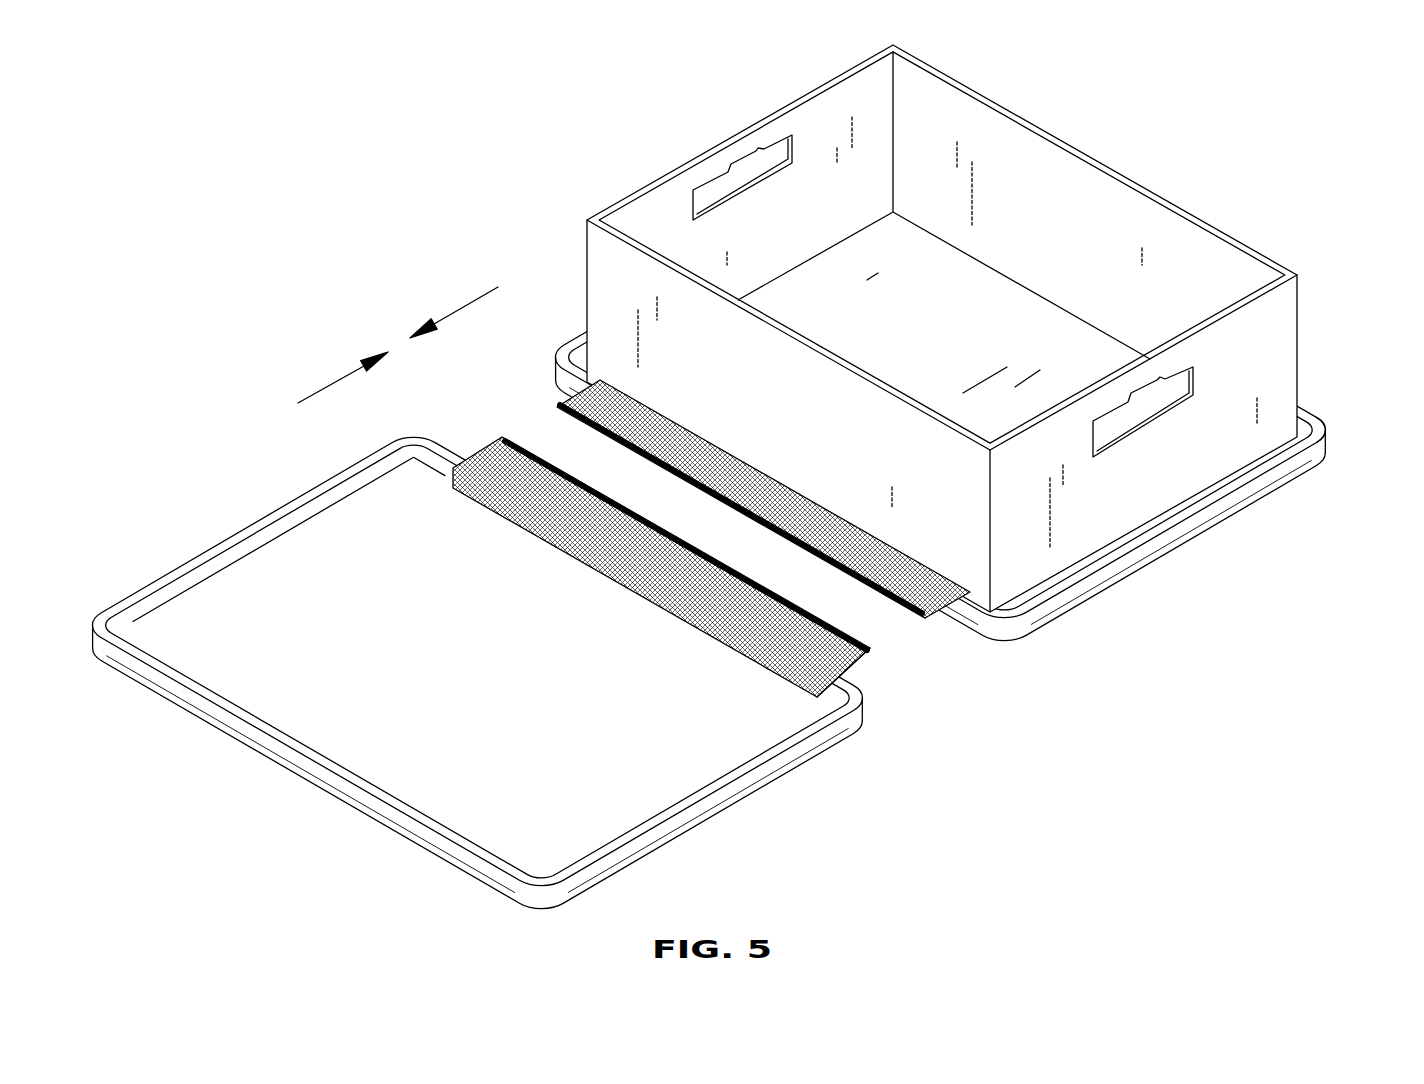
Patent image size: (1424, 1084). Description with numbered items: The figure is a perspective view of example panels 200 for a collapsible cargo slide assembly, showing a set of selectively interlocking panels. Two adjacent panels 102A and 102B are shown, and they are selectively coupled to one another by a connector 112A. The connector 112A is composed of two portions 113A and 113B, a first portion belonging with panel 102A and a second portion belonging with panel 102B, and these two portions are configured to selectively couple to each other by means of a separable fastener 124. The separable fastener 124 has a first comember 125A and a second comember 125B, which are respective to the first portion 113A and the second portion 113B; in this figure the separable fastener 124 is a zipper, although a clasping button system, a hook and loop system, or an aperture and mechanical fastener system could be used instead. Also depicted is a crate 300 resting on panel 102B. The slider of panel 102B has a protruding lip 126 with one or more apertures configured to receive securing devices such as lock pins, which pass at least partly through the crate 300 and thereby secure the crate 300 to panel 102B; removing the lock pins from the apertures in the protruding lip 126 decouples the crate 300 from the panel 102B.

The panels 200 is at (242, 202).
The crate 300 is at (1112, 140).
The panel 102A is at (722, 837).
The panel 102B is at (1185, 571).
The connector 112A is at (482, 445).
The portion 113A is at (855, 665).
The portion 113B is at (937, 617).
The separable fastener 124 is at (901, 624).
The comember 125A is at (497, 437).
The comember 125B is at (567, 425).
The protruding lip 126 is at (1340, 405).